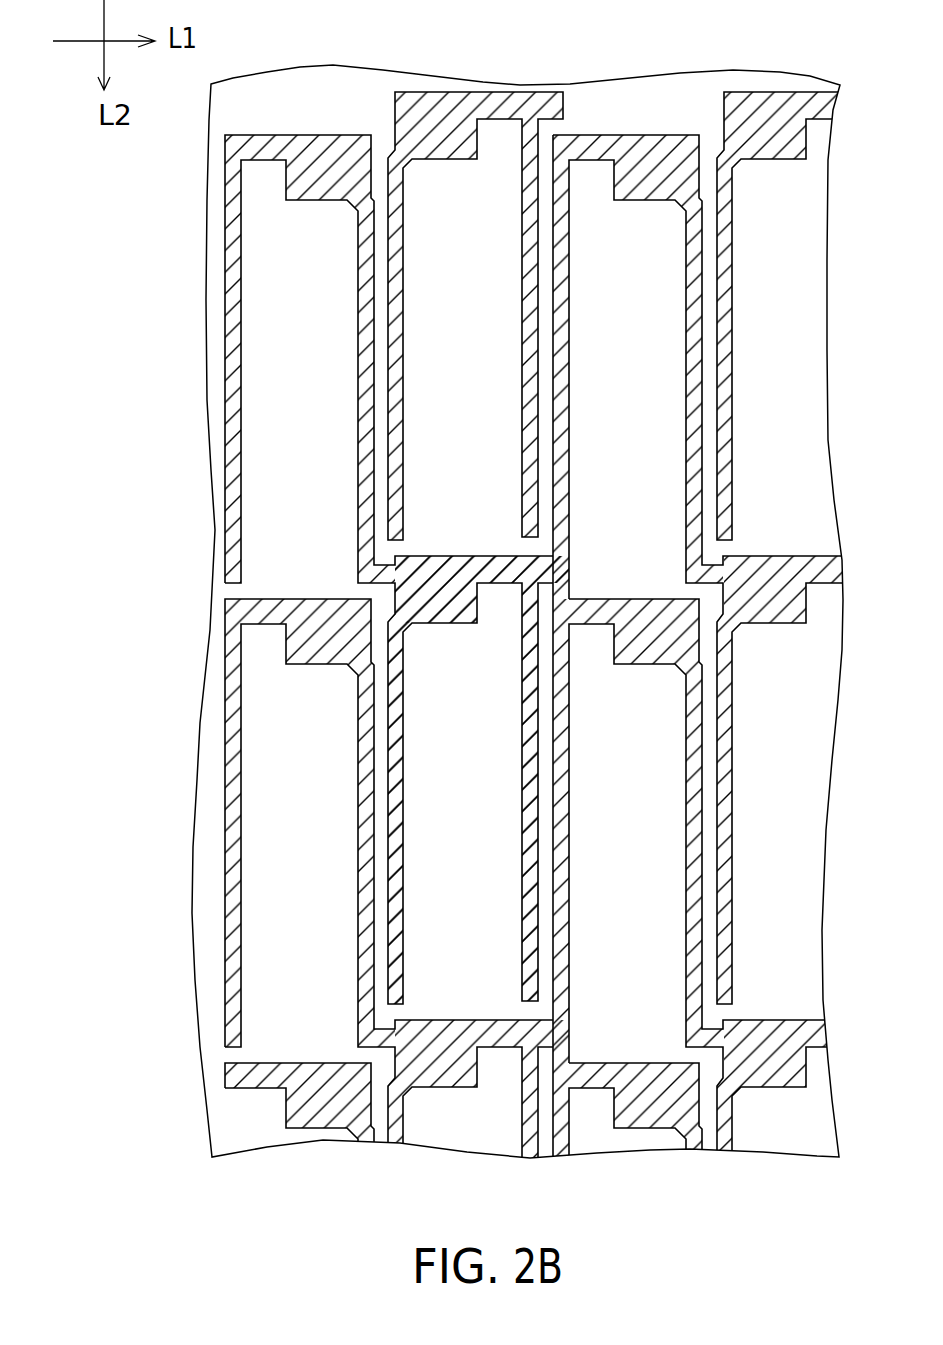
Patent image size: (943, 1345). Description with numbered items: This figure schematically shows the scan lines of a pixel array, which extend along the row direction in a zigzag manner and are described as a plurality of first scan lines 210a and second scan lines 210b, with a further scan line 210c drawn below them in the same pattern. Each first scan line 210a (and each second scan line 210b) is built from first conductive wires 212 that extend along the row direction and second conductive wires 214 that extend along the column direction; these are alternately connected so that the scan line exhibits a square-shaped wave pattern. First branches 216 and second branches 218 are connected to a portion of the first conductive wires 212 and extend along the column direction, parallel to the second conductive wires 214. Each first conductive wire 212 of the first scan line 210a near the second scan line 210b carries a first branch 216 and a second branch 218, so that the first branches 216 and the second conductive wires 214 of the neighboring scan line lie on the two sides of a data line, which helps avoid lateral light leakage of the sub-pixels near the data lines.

The first scan line 210a is at (112, 508).
The second scan line 210b is at (203, 808).
The third electrode unit 210c is at (204, 1080).
The first conductive wire 212 is at (410, 592).
The second conductive wire 214 is at (362, 542).
The first branch 216 is at (395, 640).
The second branch 218 is at (530, 703).